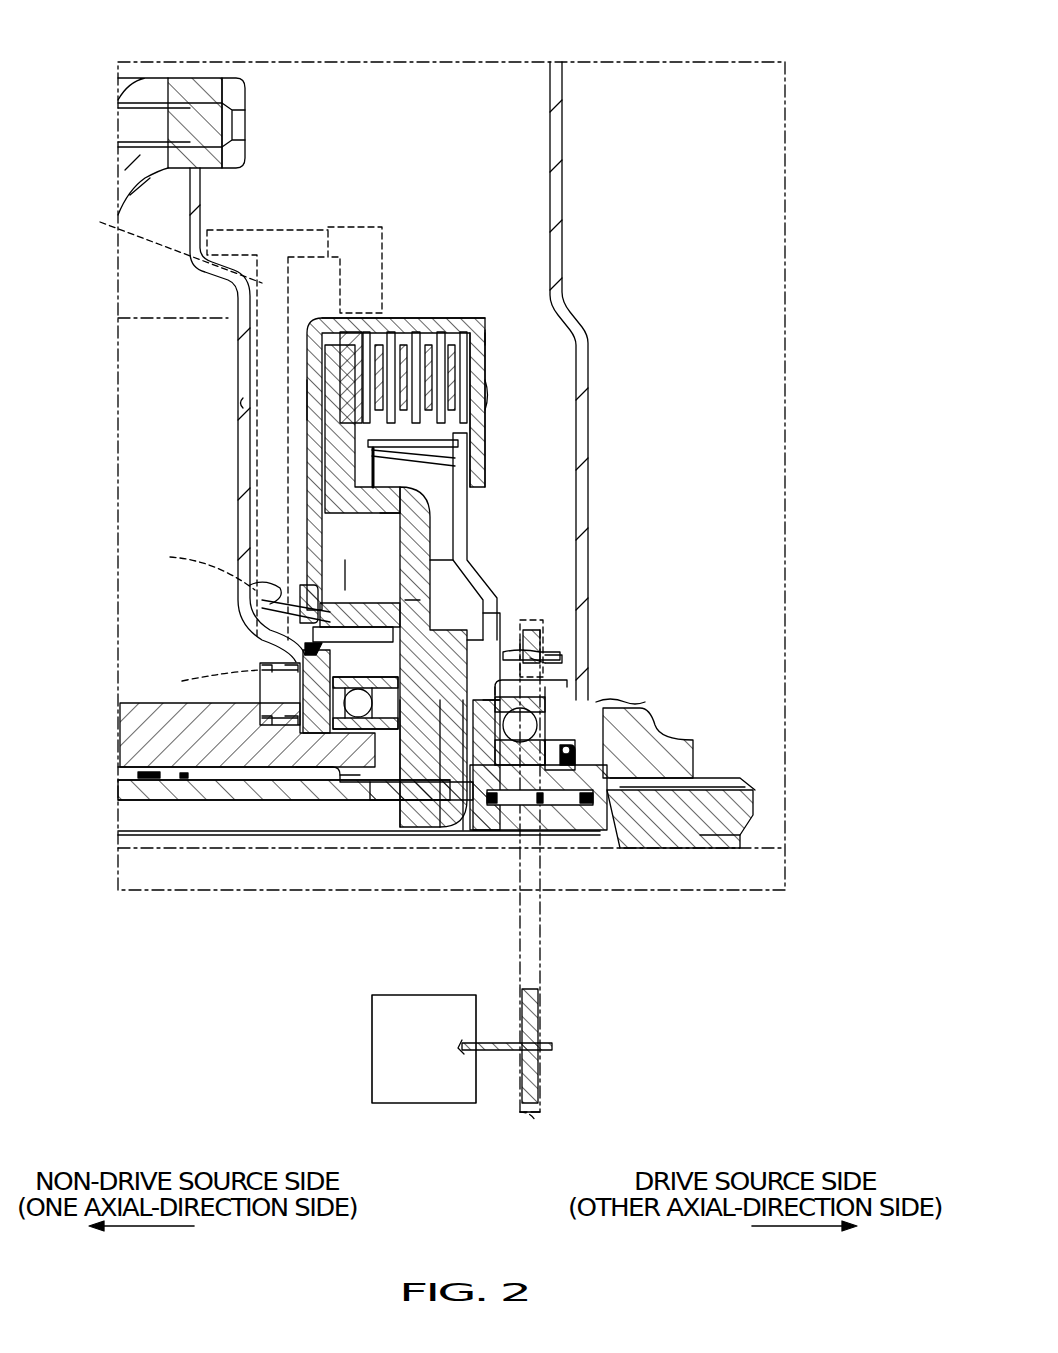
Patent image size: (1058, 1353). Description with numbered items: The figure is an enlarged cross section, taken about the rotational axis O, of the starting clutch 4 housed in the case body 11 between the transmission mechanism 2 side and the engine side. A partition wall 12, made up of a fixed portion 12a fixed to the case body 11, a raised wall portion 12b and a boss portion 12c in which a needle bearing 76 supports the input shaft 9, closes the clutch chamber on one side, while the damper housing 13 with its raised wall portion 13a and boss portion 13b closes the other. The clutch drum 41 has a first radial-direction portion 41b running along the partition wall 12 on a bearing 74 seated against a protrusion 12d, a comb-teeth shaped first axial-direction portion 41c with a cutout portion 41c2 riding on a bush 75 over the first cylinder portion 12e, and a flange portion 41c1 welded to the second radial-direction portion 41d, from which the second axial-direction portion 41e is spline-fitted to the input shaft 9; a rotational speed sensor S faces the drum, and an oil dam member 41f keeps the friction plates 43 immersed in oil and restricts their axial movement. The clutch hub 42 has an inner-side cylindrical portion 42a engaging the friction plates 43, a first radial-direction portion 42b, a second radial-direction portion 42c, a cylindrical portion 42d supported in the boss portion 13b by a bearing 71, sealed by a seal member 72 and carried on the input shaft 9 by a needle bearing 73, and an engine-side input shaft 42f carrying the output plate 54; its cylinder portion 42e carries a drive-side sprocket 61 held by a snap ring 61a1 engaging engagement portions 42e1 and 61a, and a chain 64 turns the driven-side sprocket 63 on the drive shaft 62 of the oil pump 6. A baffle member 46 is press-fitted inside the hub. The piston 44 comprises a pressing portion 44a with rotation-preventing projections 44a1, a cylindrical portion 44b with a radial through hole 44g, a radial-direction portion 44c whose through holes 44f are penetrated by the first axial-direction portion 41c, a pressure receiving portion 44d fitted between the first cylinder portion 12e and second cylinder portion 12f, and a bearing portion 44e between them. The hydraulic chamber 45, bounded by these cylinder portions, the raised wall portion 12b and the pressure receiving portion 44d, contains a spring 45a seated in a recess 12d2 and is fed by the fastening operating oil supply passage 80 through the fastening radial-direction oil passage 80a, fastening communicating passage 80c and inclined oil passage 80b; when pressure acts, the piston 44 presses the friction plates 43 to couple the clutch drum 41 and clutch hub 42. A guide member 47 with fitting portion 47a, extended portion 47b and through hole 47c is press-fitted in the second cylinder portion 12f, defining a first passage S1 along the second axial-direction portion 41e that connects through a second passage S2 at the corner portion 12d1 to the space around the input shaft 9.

The transmission mechanism 2 is at (178, 305).
The starting clutch 4 is at (506, 243).
The oil pump 6 is at (372, 1055).
The input shaft 9 is at (128, 776).
The case body 11 is at (150, 70).
The partition wall 12 is at (230, 145).
The fixed portion 12a is at (205, 78).
The raised wall portion 12b is at (181, 123).
The boss portion 12c is at (132, 838).
The protrusion 12d is at (273, 577).
The corner portion 12d1 is at (320, 777).
The recess 12d2 is at (262, 690).
The first cylinder portion 12e is at (325, 608).
The second cylinder portion 12f is at (345, 768).
The damper housing 13 is at (556, 130).
The raised wall portion 13a is at (617, 381).
The boss portion 13b is at (612, 706).
The clutch drum 41 is at (407, 265).
The first radial-direction portion 41b is at (313, 398).
The first axial-direction portion 41c is at (370, 612).
The flange portion 41c1 is at (487, 595).
The cutout portion 41c2 is at (457, 575).
The second radial-direction portion 41d is at (457, 742).
The second axial-direction portion 41e is at (382, 745).
The oil dam member 41f is at (480, 326).
The clutch hub 42 is at (518, 410).
The inner-side cylindrical portion 42a is at (478, 438).
The first radial-direction portion 42b is at (467, 507).
The second radial-direction portion 42c is at (482, 745).
The cylindrical portion 42d is at (565, 780).
The cylinder portion 42e is at (555, 684).
The engagement portion 42e1 is at (562, 660).
The engine-side input shaft 42f is at (680, 840).
The friction plates 43 is at (415, 335).
The piston 44 is at (304, 464).
The pressing portion 44a is at (340, 368).
The projections 44a1 is at (350, 340).
The cylindrical portion 44b is at (350, 505).
The radial-direction portion 44c is at (470, 500).
The pressure receiving portion 44d is at (217, 707).
The bearing portion 44e is at (358, 700).
The through holes 44f is at (410, 600).
The through hole 44g is at (387, 502).
The hydraulic chamber 45 is at (308, 655).
The spring 45a is at (300, 665).
The baffle member 46 is at (352, 473).
The guide member 47 is at (431, 841).
The fitting portion 47a is at (343, 755).
The extended portion 47b is at (486, 765).
The through hole 47c is at (363, 745).
The output plate 54 is at (700, 760).
The drive-side sprocket 61 is at (530, 632).
The engagement portion 61a is at (542, 660).
The snap ring 61a1 is at (542, 662).
The drive shaft 62 is at (553, 1047).
The driven-side sprocket 63 is at (530, 1076).
The chain 64 is at (540, 1112).
The bearing 71 is at (520, 742).
The seal member 72 is at (585, 782).
The needle bearing 73 is at (540, 785).
The bearing 74 is at (307, 583).
The bush 75 is at (358, 605).
The needle bearing 76 is at (163, 792).
The fastening operating oil supply passage 80 is at (265, 262).
The fastening radial-direction oil passage 80a is at (154, 245).
The inclined oil passage 80b is at (198, 681).
The fastening communicating passage 80c is at (191, 566).
The rotational speed sensor S is at (355, 227).
The first passage S1 is at (403, 766).
The second passage S2 is at (319, 833).
The axis O is at (725, 850).